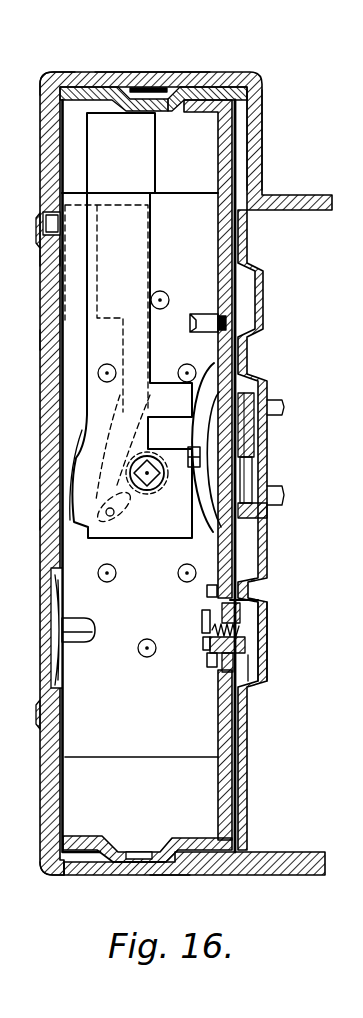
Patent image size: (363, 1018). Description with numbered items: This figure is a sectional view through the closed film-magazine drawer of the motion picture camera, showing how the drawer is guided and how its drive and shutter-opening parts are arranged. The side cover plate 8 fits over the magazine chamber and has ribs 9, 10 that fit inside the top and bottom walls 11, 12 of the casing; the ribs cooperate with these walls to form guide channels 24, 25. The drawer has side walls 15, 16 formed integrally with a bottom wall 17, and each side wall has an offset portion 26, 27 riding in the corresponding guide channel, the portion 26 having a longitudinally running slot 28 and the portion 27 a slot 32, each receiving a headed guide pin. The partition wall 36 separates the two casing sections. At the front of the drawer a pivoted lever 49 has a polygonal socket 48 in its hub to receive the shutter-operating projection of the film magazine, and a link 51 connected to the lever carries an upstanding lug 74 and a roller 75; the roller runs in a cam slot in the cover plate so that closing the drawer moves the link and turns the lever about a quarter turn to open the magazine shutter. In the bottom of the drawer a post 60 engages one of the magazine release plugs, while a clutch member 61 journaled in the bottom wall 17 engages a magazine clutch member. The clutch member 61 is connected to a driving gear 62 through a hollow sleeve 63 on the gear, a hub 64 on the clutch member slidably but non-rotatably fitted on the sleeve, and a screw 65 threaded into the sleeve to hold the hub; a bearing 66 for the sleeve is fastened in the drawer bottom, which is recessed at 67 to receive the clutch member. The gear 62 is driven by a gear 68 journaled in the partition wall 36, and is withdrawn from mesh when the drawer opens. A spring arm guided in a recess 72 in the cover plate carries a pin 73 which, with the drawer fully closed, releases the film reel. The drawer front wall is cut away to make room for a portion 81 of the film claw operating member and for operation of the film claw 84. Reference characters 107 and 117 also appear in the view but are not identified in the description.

The side cover plate 8 is at (43, 137).
The rib 9 is at (73, 72).
The rib 10 is at (88, 866).
The top wall 11 is at (160, 72).
The bottom wall 12 is at (190, 868).
The side wall 15 is at (193, 100).
The side wall 16 is at (85, 838).
The bottom wall 17 is at (226, 162).
The guide channel 24 is at (122, 87).
The guide channel 25 is at (125, 875).
The offset portion 26 is at (175, 84).
The offset portion 27 is at (164, 866).
The slot 28 is at (132, 88).
The slot 32 is at (143, 852).
The partition wall 36 is at (247, 768).
The polygonal socket 48 is at (152, 482).
The pivoted lever 49 is at (107, 497).
The link 51 is at (100, 460).
The post 60 is at (203, 314).
The clutch member 61 is at (208, 654).
The driving gear 62 is at (248, 658).
The hollow sleeve 63 is at (258, 614).
The hub 64 is at (203, 635).
The screw 65 is at (202, 608).
The bearing 66 is at (267, 638).
The recess 67 is at (217, 678).
The gear 68 is at (254, 456).
The recess 72 is at (52, 586).
The pin 73 is at (86, 638).
The upstanding lug 74 is at (40, 256).
The roller 75 is at (45, 212).
The portion of the film claw operating member 81 is at (212, 408).
The film claw 84 is at (196, 447).
The lever member 107 is at (20, 521).
The wall member 117 is at (38, 345).